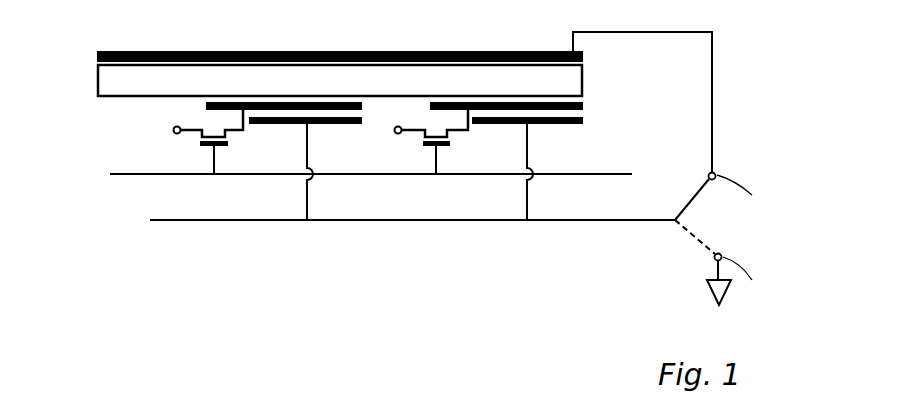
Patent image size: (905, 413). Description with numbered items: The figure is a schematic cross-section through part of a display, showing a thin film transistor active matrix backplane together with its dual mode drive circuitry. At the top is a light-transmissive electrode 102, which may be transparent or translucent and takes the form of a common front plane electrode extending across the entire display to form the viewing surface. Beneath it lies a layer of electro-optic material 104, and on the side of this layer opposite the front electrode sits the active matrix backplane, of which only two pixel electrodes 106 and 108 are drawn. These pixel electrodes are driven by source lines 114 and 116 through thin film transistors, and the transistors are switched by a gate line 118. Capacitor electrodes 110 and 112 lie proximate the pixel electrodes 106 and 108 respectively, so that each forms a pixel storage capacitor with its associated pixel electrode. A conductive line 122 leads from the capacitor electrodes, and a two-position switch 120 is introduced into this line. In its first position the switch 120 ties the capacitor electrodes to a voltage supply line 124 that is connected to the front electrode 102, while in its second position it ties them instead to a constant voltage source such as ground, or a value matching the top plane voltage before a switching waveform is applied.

The light-transmissive electrode 102 is at (335, 51).
The layer of electro-optic material 104 is at (104, 80).
The pixel electrode 106 is at (327, 101).
The pixel electrode 108 is at (584, 101).
The capacitor electrode 110 is at (252, 126).
The capacitor electrode 112 is at (580, 125).
The source line 114 is at (174, 130).
The source line 116 is at (395, 130).
The gate line 118 is at (128, 174).
The two-position switch 120 is at (674, 223).
The conductive line 122 is at (175, 220).
The voltage supply line 124 is at (714, 52).